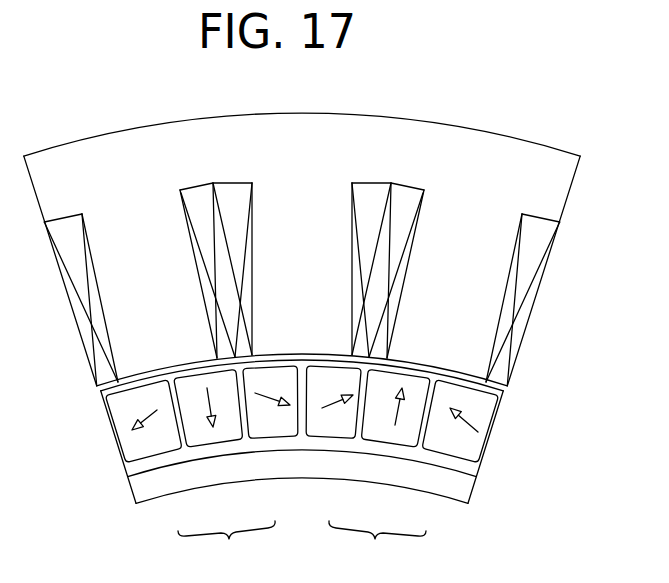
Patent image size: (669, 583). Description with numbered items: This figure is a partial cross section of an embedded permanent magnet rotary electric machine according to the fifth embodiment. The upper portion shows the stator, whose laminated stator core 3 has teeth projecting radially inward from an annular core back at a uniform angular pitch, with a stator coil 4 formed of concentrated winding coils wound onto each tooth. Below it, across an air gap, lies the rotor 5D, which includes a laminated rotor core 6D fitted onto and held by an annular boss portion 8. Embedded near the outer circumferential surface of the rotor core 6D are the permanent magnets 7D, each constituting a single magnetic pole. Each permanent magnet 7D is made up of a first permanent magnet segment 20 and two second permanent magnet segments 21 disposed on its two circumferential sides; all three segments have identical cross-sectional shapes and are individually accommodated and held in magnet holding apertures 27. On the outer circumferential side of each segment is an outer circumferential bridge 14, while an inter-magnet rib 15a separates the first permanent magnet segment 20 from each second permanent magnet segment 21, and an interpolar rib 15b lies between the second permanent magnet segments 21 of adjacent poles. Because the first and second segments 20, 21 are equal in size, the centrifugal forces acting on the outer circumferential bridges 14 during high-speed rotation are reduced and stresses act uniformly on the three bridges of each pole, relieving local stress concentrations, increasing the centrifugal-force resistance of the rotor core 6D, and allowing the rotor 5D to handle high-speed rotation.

The stator core 3 is at (570, 191).
The stator coil 4 is at (551, 244).
The rotor 5D is at (493, 453).
The rotor core 6D is at (127, 463).
The permanent magnet 7D is at (302, 544).
The boss portion 8 is at (165, 483).
The outer circumferential bridge 14 is at (472, 383).
The inter-magnet rib 15a is at (437, 398).
The interpolar rib 15b is at (303, 440).
The first permanent magnet segment 20 is at (217, 437).
The second permanent magnet segment 21 is at (157, 440).
The magnet holding aperture 27 is at (124, 418).